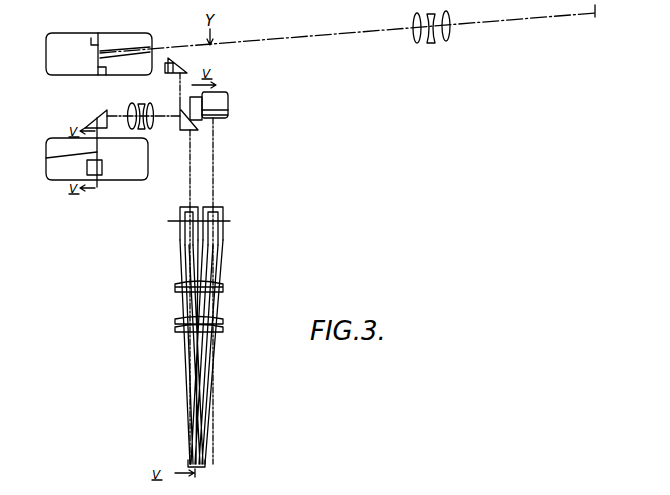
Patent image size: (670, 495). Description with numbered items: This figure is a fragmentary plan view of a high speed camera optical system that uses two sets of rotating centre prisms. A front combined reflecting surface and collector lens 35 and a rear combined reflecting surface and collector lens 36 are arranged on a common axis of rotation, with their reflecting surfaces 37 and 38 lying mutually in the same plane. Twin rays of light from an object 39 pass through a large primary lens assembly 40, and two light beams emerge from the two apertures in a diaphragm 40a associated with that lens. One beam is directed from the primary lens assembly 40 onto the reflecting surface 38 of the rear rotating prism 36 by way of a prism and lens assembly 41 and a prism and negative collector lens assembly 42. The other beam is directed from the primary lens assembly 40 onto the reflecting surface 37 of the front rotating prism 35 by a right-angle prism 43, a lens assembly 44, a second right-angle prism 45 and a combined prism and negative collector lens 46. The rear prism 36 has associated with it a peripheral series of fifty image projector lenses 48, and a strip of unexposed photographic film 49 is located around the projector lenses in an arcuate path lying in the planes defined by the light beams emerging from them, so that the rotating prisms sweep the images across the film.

The front combined reflecting surface and collector lens 35 is at (55, 140).
The rear combined reflecting surface and collector lens 36 is at (63, 43).
The reflecting surface 37 is at (46, 158).
The reflecting surface 38 is at (91, 38).
The object 39 is at (190, 465).
The primary lens assembly 40 is at (223, 322).
The diaphragm 40a is at (240, 208).
The prism and lens assembly 41 is at (228, 111).
The prism and negative collector lens assembly 42 is at (187, 71).
The right-angle prism 43 is at (198, 130).
The lens assembly 44 is at (150, 129).
The right-angle prism 45 is at (91, 124).
The combined prism and negative collector lens 46 is at (100, 175).
The image projector lenses 48 is at (431, 39).
The strip of unexposed photographic film 49 is at (597, 14).